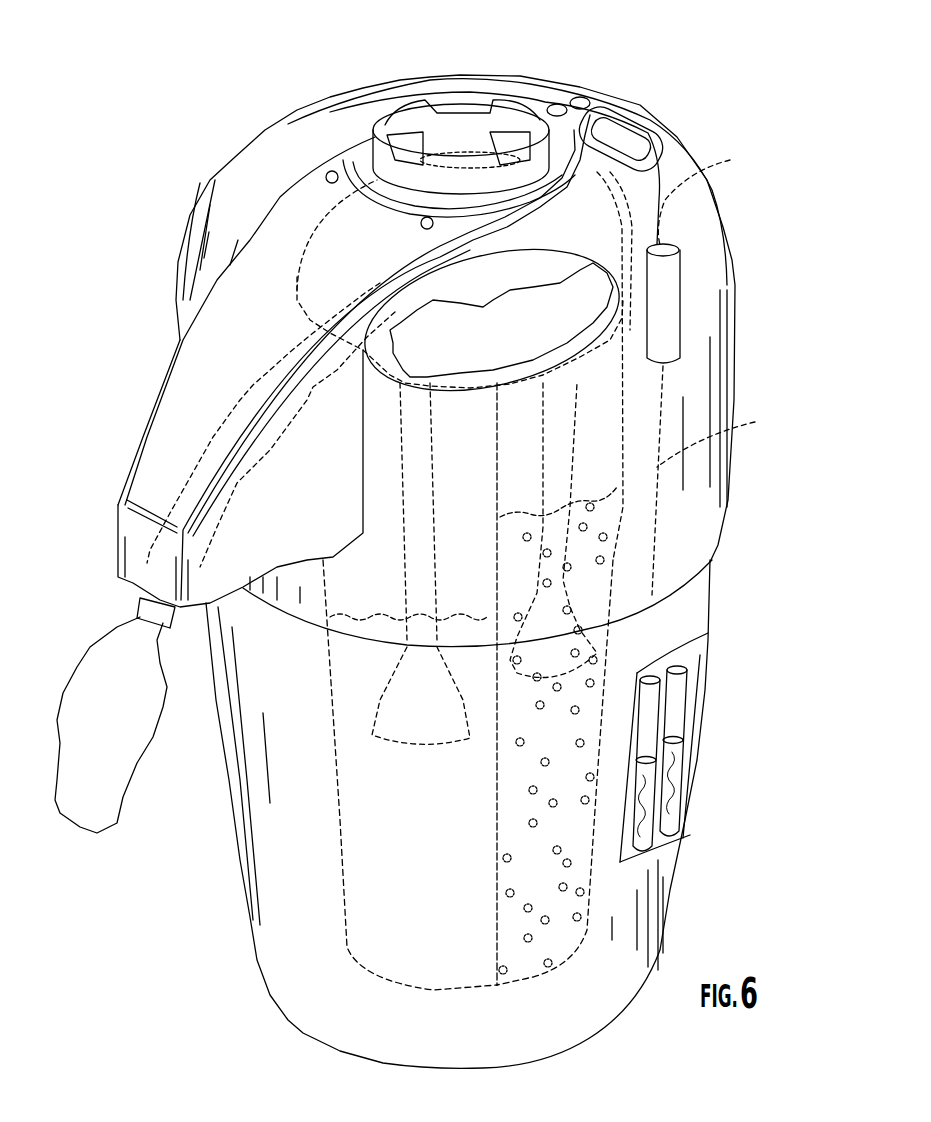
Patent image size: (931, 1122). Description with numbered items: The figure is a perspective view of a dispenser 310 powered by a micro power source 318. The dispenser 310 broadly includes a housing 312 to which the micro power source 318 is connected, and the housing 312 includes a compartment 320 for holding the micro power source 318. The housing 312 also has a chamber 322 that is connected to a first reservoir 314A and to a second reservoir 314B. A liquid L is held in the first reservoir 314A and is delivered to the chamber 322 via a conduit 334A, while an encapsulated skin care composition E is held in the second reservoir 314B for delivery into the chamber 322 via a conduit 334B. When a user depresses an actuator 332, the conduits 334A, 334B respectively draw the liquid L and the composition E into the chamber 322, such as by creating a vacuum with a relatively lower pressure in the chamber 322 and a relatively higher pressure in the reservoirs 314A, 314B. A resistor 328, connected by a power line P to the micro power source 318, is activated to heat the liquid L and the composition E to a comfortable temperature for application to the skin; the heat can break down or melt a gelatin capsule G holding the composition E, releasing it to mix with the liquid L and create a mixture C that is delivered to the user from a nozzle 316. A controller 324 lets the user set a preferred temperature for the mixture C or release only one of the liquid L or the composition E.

The dispenser 310 is at (155, 172).
The housing 312 is at (272, 918).
The first reservoir 314A is at (440, 973).
The second reservoir 314B is at (527, 968).
The nozzle 316 is at (167, 437).
The micro power source 318 is at (708, 660).
The compartment 320 is at (668, 833).
The chamber 322 is at (575, 264).
The controller 324 is at (630, 130).
The resistor 328 is at (673, 307).
The actuator 332 is at (470, 125).
The conduit 334A is at (403, 540).
The conduit 334B is at (547, 443).
The power line P is at (712, 308).
The mixture C is at (438, 356).
The liquid L is at (394, 854).
The encapsulated skin care composition E is at (525, 842).
The gelatin capsule G is at (547, 920).